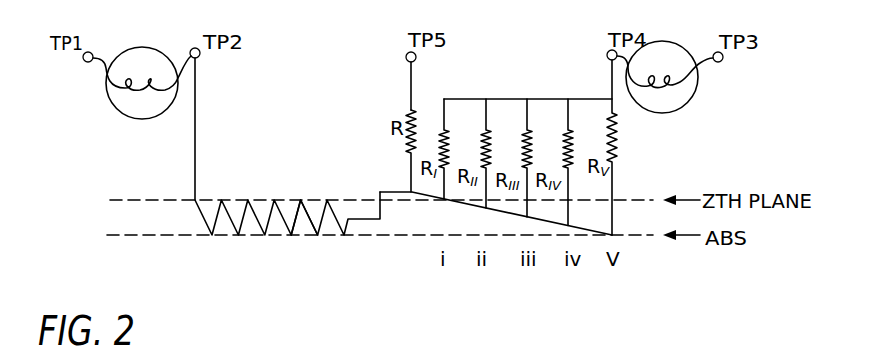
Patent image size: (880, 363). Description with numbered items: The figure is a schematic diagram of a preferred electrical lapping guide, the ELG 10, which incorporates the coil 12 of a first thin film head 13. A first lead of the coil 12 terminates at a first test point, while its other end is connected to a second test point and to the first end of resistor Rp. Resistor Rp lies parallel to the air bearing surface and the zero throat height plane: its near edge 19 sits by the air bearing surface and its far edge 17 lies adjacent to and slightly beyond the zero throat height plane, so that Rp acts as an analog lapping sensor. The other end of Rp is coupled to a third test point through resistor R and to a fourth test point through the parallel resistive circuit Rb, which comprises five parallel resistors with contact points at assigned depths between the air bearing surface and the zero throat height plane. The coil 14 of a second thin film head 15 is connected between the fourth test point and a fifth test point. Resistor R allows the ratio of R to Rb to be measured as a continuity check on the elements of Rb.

The ELG 10 is at (316, 78).
The coil 12 is at (137, 82).
The first thin film head 13 is at (138, 108).
The coil 14 is at (660, 80).
The second thin film head 15 is at (673, 100).
The far edge 17 is at (277, 195).
The near edge 19 is at (304, 245).